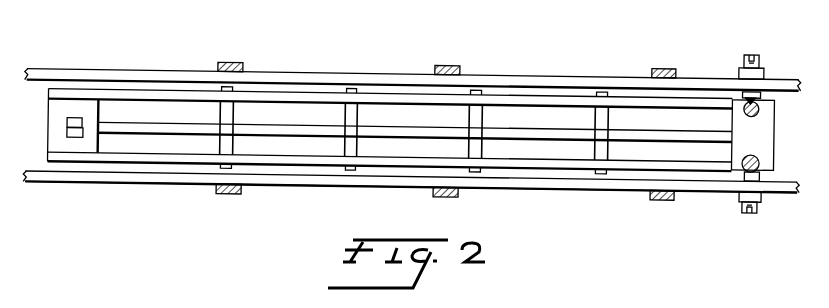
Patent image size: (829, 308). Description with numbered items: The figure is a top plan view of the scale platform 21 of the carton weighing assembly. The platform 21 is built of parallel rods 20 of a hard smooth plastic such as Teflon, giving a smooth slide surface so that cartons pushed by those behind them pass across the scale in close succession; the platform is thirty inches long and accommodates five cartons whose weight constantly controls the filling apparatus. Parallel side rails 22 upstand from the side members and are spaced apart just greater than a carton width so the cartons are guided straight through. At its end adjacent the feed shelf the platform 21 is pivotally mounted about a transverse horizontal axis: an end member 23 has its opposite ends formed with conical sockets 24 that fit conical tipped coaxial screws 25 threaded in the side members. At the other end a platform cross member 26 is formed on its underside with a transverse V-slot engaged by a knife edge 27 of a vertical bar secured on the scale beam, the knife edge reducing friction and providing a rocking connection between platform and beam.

The parallel rods 20 is at (433, 104).
The platform 21 is at (305, 73).
The side rails 22 is at (528, 74).
The end member 23 is at (753, 122).
The conical sockets 24 is at (742, 90).
The conical tipped coaxial screws 25 is at (754, 57).
The platform cross member 26 is at (59, 126).
The knife edge 27 is at (89, 128).